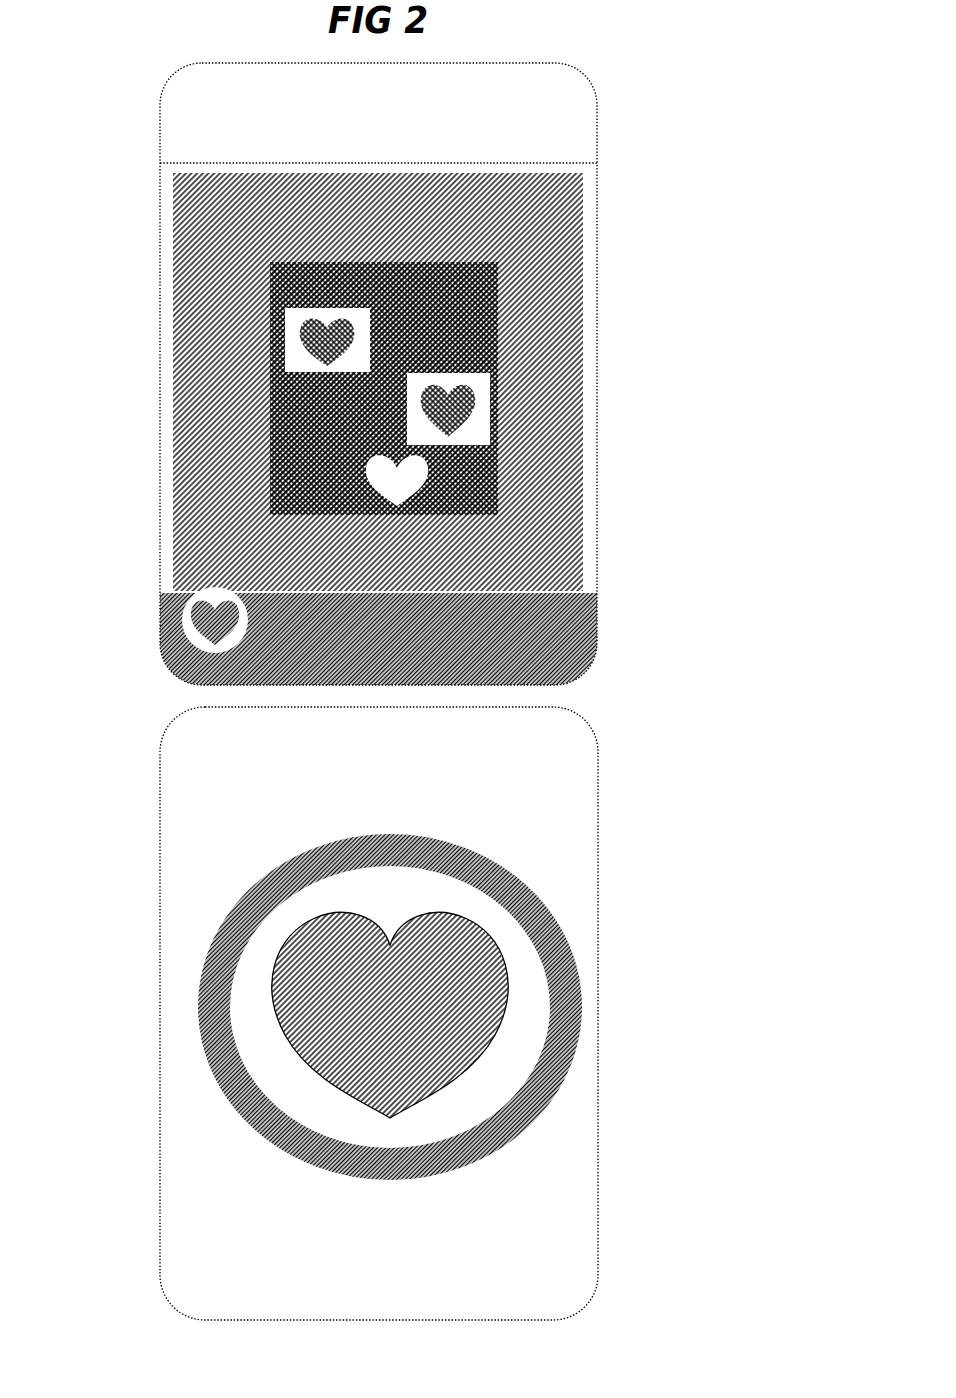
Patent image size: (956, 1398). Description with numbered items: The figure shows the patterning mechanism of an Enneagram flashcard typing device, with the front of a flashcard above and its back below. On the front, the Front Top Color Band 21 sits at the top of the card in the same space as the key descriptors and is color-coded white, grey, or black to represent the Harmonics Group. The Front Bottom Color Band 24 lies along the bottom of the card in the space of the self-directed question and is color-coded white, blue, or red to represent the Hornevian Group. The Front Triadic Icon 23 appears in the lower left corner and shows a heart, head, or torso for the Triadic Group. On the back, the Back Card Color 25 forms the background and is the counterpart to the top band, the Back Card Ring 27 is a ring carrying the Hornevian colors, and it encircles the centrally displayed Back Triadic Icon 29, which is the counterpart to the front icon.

The Front Top Color Band 21 is at (325, 374).
The Front Triadic Icon 23 is at (198, 615).
The Front Bottom Color Band 24 is at (192, 653).
The Back Card Color 25 is at (445, 1013).
The Back Card Ring 27 is at (540, 903).
The Back Triadic Icon 29 is at (440, 1025).